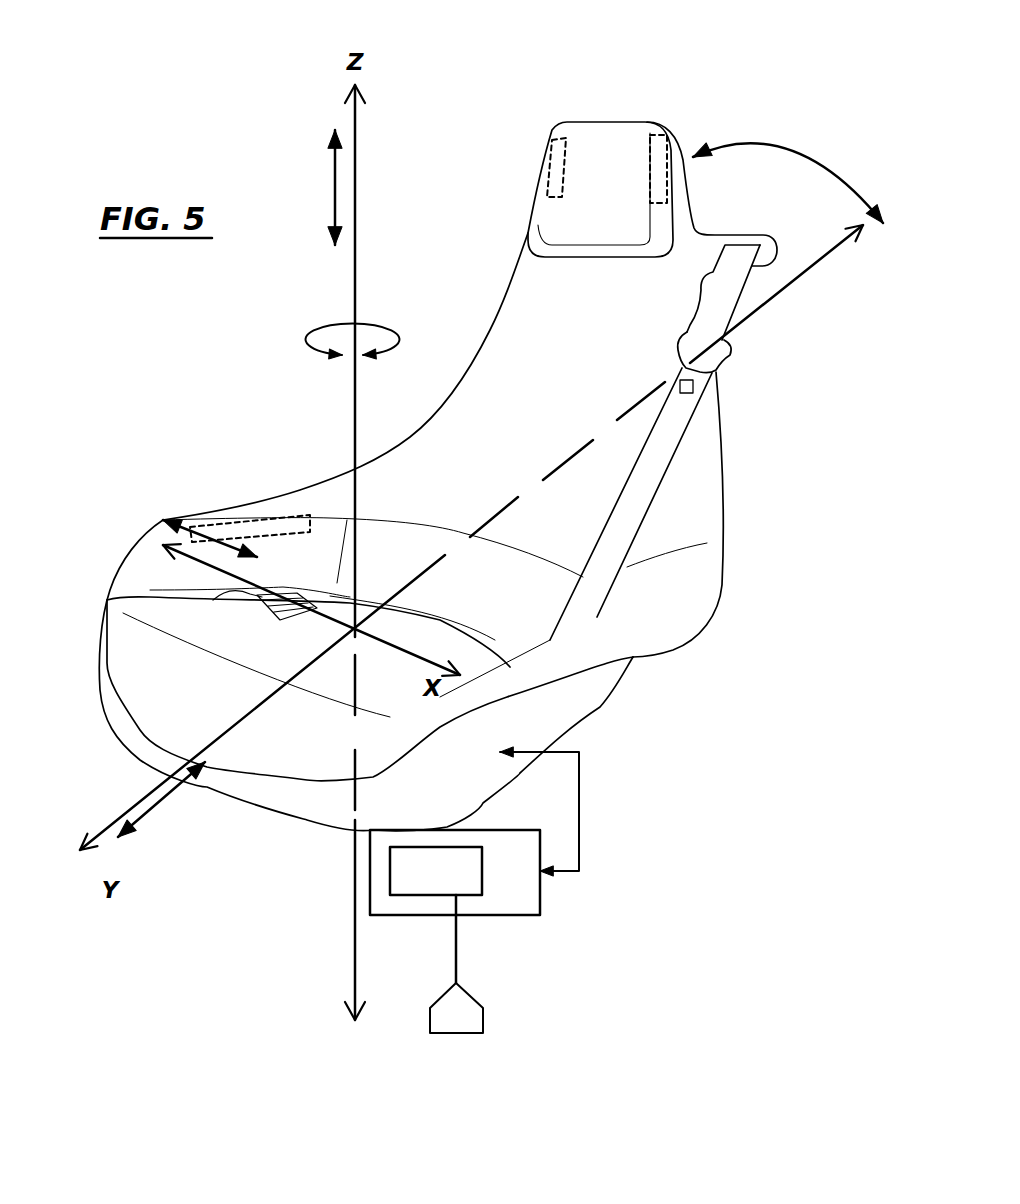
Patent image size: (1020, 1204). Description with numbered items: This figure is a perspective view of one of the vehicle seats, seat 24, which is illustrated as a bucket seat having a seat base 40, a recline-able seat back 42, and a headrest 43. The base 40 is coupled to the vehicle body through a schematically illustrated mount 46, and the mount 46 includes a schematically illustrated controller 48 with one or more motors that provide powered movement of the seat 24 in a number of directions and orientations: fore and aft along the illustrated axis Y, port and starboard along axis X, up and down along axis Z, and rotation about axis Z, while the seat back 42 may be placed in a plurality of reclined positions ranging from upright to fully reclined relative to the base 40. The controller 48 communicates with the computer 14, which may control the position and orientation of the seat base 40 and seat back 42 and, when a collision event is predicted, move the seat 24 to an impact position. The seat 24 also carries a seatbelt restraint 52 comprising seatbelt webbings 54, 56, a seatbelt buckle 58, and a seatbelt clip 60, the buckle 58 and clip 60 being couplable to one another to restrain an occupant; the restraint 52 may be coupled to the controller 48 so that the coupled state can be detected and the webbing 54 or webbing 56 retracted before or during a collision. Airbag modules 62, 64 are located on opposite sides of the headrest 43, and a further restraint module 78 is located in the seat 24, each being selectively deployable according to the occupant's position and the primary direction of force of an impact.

The computer 14 is at (444, 1029).
The seat 24 is at (268, 403).
The seat base 40 is at (110, 641).
The seat back 42 is at (470, 367).
The headrest 43 is at (609, 121).
The mount 46 is at (505, 863).
The controller 48 is at (424, 888).
The seatbelt restraint 52 is at (648, 442).
The seatbelt webbing 54 is at (630, 500).
The seatbelt webbing 56 is at (226, 596).
The seatbelt buckle 58 is at (282, 612).
The seatbelt clip 60 is at (682, 334).
The airbag module 62 is at (551, 201).
The airbag module 64 is at (662, 207).
The restraint module 78 is at (277, 517).